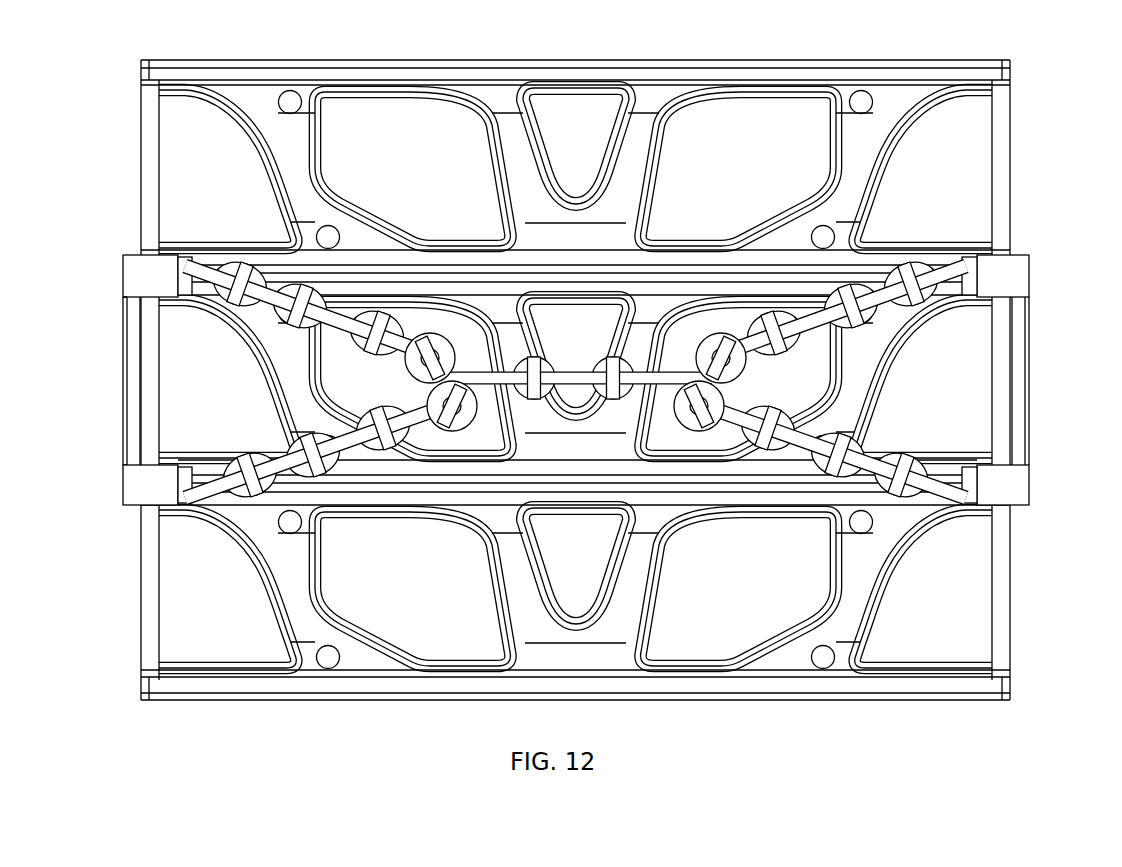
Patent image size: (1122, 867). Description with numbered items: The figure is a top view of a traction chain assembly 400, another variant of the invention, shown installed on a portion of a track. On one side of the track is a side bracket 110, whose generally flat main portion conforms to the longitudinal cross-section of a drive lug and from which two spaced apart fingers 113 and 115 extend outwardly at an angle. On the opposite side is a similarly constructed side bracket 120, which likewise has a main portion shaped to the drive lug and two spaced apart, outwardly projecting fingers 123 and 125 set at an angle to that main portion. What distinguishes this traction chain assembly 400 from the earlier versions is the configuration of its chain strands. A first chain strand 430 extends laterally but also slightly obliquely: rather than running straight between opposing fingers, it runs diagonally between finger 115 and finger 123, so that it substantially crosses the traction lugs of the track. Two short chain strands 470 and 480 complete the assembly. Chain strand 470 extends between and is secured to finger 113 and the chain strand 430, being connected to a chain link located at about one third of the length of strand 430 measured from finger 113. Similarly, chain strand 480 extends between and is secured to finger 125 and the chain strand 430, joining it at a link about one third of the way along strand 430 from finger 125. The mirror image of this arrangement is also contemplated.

The traction chain assembly 400 is at (1064, 178).
The chain strand 480 is at (240, 240).
The first chain strand 430 is at (935, 240).
The chain strand 470 is at (935, 443).
The finger 125 is at (130, 262).
The side bracket 120 is at (130, 384).
The finger 123 is at (127, 503).
The finger 115 is at (1000, 262).
The side bracket 110 is at (1022, 380).
The finger 113 is at (1000, 480).